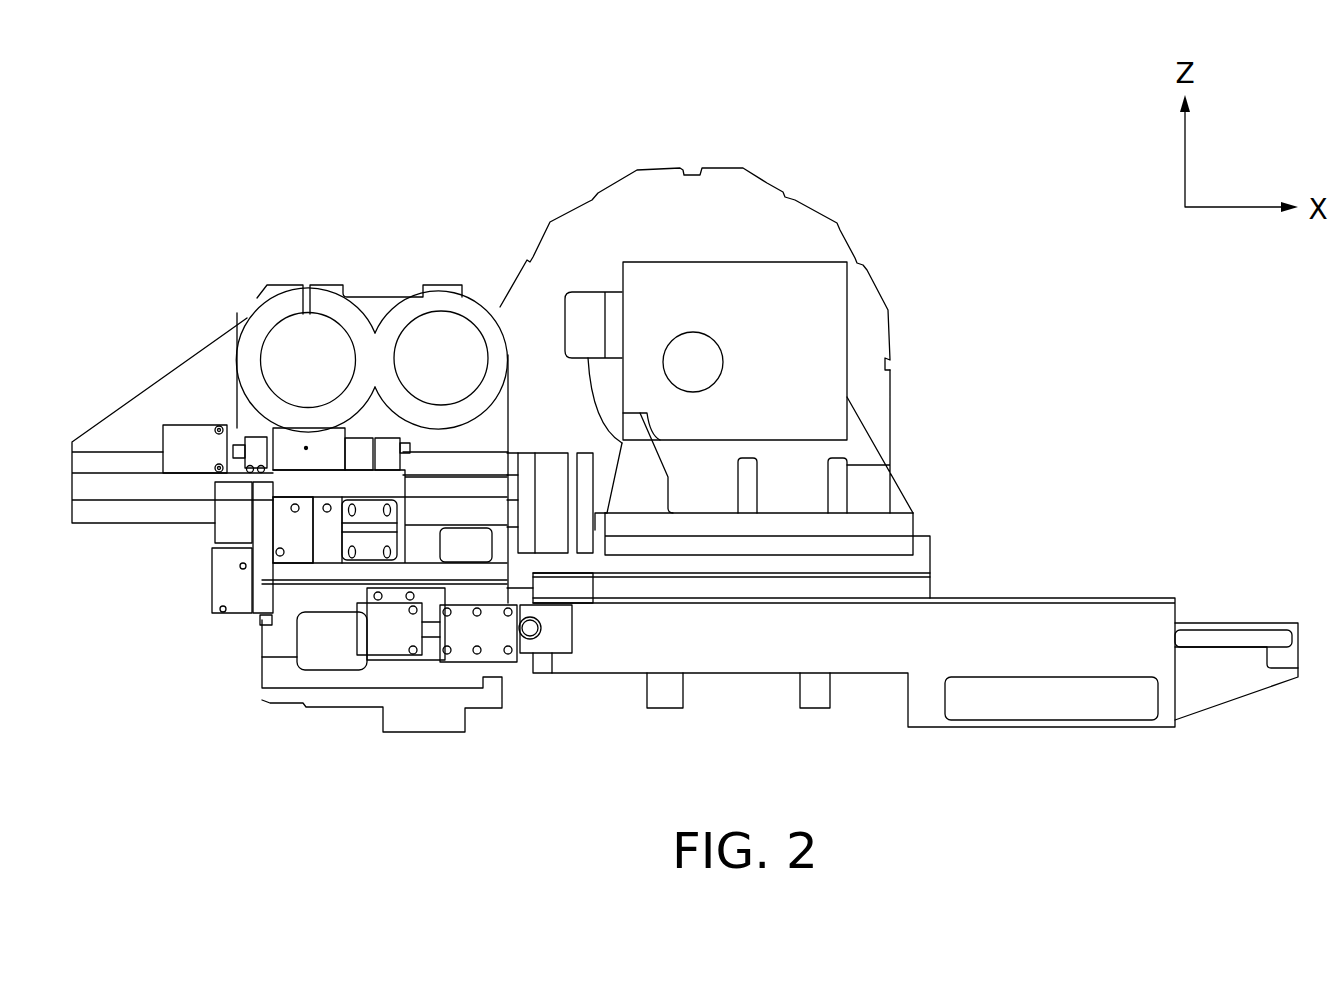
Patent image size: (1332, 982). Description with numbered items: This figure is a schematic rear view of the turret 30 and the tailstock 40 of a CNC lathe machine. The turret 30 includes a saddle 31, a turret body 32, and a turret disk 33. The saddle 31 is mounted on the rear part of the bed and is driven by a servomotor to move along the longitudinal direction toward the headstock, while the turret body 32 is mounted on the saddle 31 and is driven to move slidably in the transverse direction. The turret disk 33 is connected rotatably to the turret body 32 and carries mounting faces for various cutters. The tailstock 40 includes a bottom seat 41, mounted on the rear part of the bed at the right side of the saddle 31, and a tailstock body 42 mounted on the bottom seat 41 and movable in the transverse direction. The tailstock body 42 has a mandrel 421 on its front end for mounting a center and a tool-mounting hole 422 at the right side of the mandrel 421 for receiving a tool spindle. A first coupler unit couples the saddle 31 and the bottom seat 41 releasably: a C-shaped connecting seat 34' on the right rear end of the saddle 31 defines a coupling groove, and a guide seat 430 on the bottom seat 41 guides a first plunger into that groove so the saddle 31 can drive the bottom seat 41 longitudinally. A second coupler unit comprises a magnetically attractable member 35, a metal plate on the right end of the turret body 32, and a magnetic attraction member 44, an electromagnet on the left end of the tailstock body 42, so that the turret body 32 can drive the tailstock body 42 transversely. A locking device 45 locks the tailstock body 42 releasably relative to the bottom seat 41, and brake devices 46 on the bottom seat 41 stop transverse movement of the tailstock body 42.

The turret 30 is at (908, 354).
The saddle 31 is at (1060, 620).
The turret body 32 is at (812, 270).
The turret disk 33 is at (752, 200).
The connecting seat 34' is at (547, 692).
The magnetically attractable member 35 is at (588, 462).
The tailstock 40 is at (215, 278).
The bottom seat 41 is at (283, 677).
The tailstock body 42 is at (170, 390).
The mandrel 421 is at (445, 325).
The tool-mounting hole 422 is at (320, 335).
The guide seat 430 is at (463, 650).
The magnetic attraction member 44 is at (557, 468).
The locking device 45 is at (305, 460).
The brake device 46 is at (240, 598).